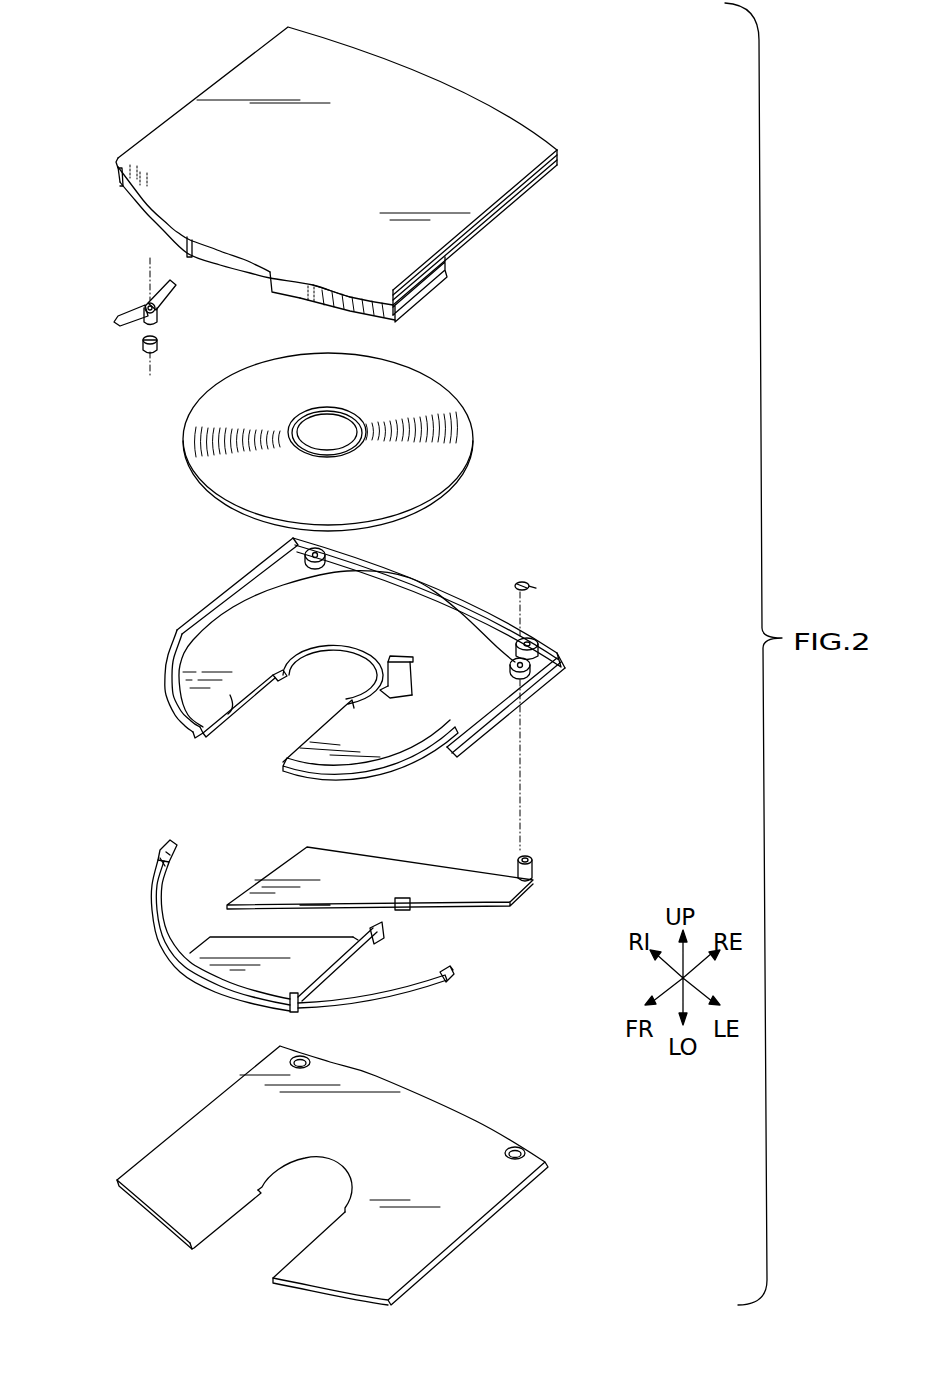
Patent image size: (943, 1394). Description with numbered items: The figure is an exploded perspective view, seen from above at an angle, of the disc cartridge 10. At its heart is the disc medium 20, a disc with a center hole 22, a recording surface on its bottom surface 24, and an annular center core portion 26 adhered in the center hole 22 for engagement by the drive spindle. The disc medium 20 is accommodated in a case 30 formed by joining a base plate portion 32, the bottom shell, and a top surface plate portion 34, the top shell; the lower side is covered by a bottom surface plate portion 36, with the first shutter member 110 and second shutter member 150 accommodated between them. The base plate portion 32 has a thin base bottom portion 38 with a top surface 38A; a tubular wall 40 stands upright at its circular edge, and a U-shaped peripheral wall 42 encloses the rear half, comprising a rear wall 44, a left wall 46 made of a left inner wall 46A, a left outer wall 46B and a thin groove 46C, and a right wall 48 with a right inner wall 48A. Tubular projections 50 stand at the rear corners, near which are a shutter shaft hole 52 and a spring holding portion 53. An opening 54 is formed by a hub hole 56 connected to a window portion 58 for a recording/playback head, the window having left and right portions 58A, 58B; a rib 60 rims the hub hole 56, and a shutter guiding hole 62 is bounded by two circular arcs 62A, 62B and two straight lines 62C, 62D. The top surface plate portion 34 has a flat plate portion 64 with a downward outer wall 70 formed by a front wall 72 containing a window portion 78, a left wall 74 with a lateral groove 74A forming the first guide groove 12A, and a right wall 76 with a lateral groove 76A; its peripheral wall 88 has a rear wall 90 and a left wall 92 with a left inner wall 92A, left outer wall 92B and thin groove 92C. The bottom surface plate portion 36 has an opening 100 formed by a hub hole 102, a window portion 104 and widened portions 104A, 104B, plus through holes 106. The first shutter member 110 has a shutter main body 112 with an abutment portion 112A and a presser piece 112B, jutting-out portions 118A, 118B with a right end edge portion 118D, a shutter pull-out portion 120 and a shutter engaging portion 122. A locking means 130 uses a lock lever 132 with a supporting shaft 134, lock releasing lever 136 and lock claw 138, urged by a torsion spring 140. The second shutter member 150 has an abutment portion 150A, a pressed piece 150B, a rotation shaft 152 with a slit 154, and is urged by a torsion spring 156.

The disc cartridge 10 is at (612, 52).
The first guide groove 12A is at (320, 261).
The disc medium 20 is at (492, 433).
The center hole 22 is at (320, 425).
The bottom surface 24 is at (464, 478).
The center core portion 26 is at (357, 428).
The case 30 is at (574, 133).
The base plate portion 32 is at (576, 640).
The top surface plate portion 34 is at (371, 189).
The bottom surface plate portion 36 is at (500, 1106).
The base bottom portion 38 is at (188, 745).
The top surface 38A is at (232, 702).
The tubular wall 40 is at (170, 716).
The peripheral wall 42 is at (365, 554).
The rear wall 44 is at (345, 548).
The left wall 46 is at (622, 700).
The left inner wall 46A is at (530, 688).
The left outer wall 46B is at (517, 690).
The thin groove 46C is at (505, 700).
The right wall 48 is at (392, 911).
The right inner wall 48A is at (262, 565).
The tubular projection 50 is at (318, 565).
The shutter shaft hole 52 is at (512, 652).
The spring holding portion 53 is at (627, 680).
The opening 54 is at (288, 670).
The hub hole 56 is at (348, 696).
The window portion for a recording/playback head 58 is at (297, 728).
The window portion portion 58A is at (238, 700).
The plate right portion 58B is at (405, 742).
The rib 60 is at (360, 660).
The shutter guiding hole 62 is at (412, 675).
The circular arc 62A is at (414, 668).
The circular arc 62B is at (382, 655).
The straight line 62C is at (400, 655).
The straight line 62D is at (392, 698).
The flat plate portion 64 is at (463, 102).
The outer wall 70 is at (310, 313).
The front wall 72 is at (290, 298).
The left wall 74 is at (450, 262).
The lateral groove 74A is at (352, 292).
The right wall 76 is at (118, 165).
The lateral groove 76A is at (118, 188).
The window portion 78 is at (240, 301).
The peripheral wall 88 is at (567, 157).
The rear wall 90 is at (522, 121).
The left wall 92 is at (606, 198).
The left inner wall 92A is at (530, 188).
The left outer wall 92B is at (520, 200).
The thin groove 92C is at (508, 212).
The opening 100 is at (280, 1198).
The hub hole 102 is at (335, 1205).
The window portion for a recording/playback head 104 is at (280, 1248).
The widened portion 104A is at (220, 1225).
The widened portion 104B is at (395, 1263).
The through hole 106 is at (368, 1058).
The first shutter member 110 is at (199, 986).
The shutter main body 112 is at (337, 955).
The abutment portion 112A is at (355, 948).
The presser piece 112B is at (384, 930).
The jutting-out portion 118A is at (295, 1008).
The jutting-out portion 118B is at (178, 845).
The right end edge portion 118D is at (165, 868).
The shutter pull-out portion 120 is at (420, 985).
The shutter engaging portion 122 is at (450, 978).
The locking means 130 is at (108, 350).
The lock lever 132 is at (145, 307).
The supporting shaft 134 is at (146, 303).
The lock releasing lever 136 is at (114, 322).
The lock claw 138 is at (174, 284).
The torsion spring 140 is at (147, 346).
The second shutter member 150 is at (419, 847).
The abutment portion 150A is at (312, 902).
The pressed piece 150B is at (406, 908).
The rotation shaft 152 is at (535, 868).
The slit 154 is at (528, 858).
The torsion spring 156 is at (526, 578).